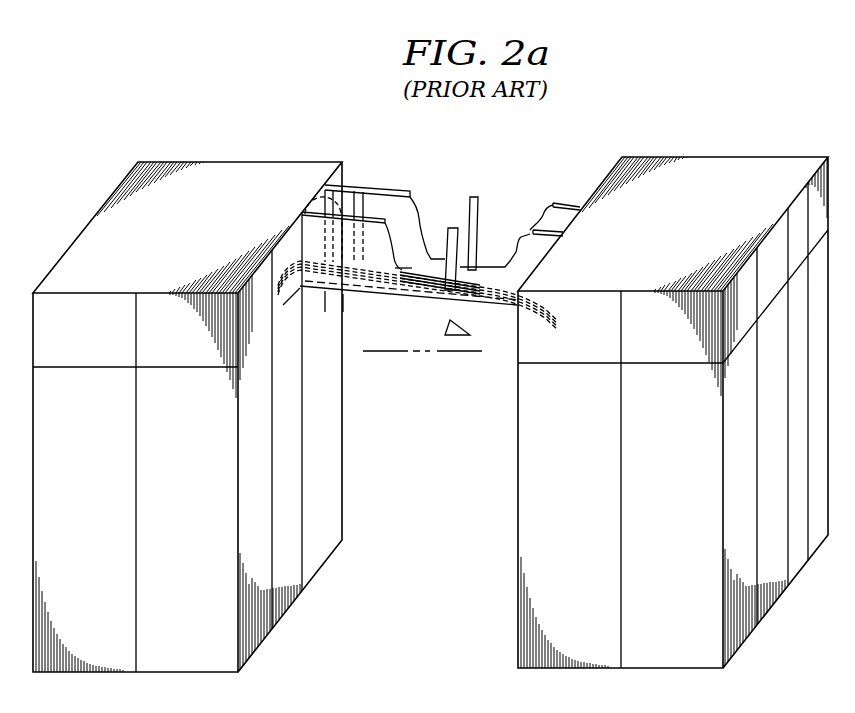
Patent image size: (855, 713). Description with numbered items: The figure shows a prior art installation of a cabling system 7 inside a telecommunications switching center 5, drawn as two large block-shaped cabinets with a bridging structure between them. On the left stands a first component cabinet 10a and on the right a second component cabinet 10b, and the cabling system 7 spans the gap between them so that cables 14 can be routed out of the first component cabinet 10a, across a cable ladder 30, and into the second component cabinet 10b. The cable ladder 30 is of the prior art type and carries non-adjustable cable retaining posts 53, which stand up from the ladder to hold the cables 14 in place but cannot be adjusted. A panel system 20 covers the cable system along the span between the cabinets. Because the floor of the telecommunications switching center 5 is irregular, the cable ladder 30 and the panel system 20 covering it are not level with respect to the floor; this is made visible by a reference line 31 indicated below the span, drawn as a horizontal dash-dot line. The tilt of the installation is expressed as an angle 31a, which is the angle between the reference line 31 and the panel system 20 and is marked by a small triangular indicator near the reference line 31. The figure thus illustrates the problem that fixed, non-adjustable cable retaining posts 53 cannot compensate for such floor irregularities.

The telecommunications switching center 5 is at (268, 103).
The cabling system 7 is at (516, 182).
The first component cabinet 10a is at (226, 163).
The second component cabinet 10b is at (725, 163).
The cables 14 is at (414, 260).
The panel system 20 is at (392, 296).
The cable ladder 30 is at (490, 300).
The reference line 31 is at (452, 352).
The angle 31a is at (452, 333).
The non-adjustable cable retaining posts 53 is at (305, 208).